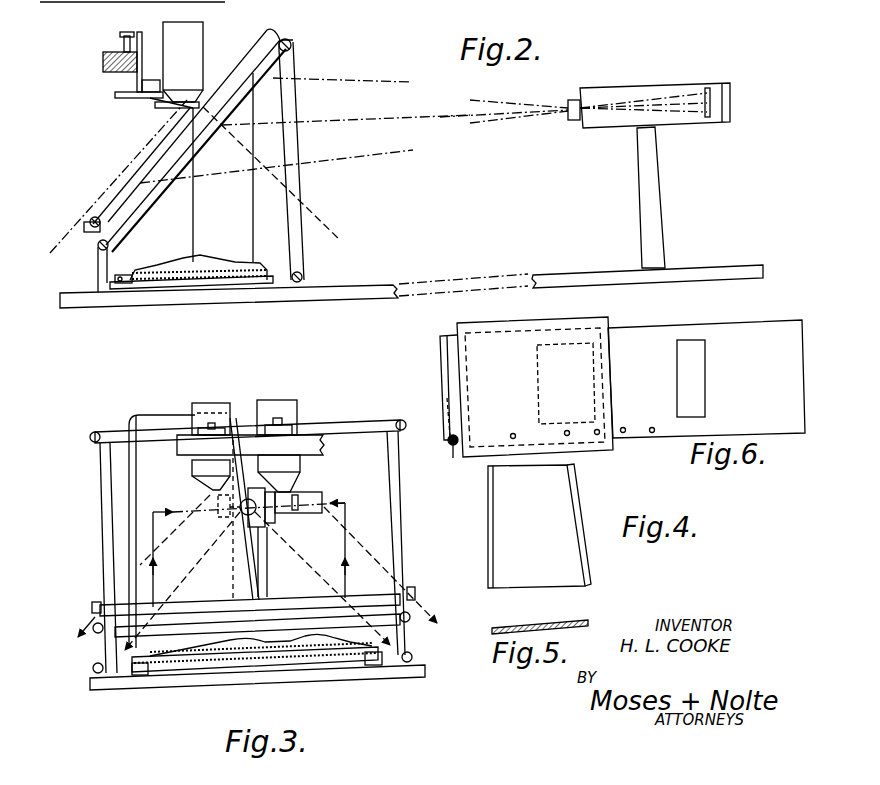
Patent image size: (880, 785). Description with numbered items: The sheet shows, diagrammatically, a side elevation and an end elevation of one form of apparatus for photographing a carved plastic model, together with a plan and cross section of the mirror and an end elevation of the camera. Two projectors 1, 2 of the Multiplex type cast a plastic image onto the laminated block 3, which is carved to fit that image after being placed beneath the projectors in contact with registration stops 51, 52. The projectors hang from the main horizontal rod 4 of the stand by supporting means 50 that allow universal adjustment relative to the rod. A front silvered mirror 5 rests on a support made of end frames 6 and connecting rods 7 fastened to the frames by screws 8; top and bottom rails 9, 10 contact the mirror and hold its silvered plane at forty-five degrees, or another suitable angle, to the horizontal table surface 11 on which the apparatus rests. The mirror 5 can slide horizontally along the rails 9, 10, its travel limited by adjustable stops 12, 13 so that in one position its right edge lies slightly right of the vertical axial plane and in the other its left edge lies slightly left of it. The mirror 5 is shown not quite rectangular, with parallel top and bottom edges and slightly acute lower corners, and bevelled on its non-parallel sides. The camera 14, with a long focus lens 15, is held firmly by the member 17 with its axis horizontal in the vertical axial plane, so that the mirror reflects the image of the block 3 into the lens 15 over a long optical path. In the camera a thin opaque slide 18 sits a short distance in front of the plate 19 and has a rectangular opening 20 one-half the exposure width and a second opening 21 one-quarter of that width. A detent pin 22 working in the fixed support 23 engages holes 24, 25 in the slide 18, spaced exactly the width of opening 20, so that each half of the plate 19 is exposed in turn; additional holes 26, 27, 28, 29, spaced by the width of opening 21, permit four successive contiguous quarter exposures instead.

In FIG. 3, the projector 1 is at (202, 410).
In FIG. 2, the projector 2 is at (197, 33).
In FIG. 3, the projector 2 is at (270, 407).
In FIG. 2, the laminated block 3 is at (187, 270).
In FIG. 3, the laminated block 3 is at (272, 658).
In FIG. 2, the main horizontal rod 4 is at (103, 63).
In FIG. 3, the main horizontal rod 4 is at (307, 440).
In FIG. 2, the front silvered mirror 5 is at (273, 30).
In FIG. 3, the front silvered mirror 5 is at (156, 422).
In FIG. 4, the front silvered mirror 5 is at (563, 475).
In FIG. 2, the end frames 6 is at (183, 158).
In FIG. 3, the end frames 6 is at (100, 516).
In FIG. 3, the connecting rods 7 is at (320, 620).
In FIG. 2, the screws 8 is at (293, 46).
In FIG. 3, the screws 8 is at (90, 440).
In FIG. 2, the top rail 9 is at (293, 42).
In FIG. 3, the top rail 9 is at (343, 422).
In FIG. 2, the bottom rail 10 is at (88, 233).
In FIG. 3, the bottom rail 10 is at (213, 604).
In FIG. 2, the horizontal table surface 11 is at (360, 292).
In FIG. 3, the horizontal table surface 11 is at (193, 683).
In FIG. 3, the adjustable stop 12 is at (92, 608).
In FIG. 2, the adjustable stop 13 is at (88, 220).
In FIG. 3, the adjustable stop 13 is at (416, 594).
In FIG. 2, the camera 14 is at (663, 84).
In FIG. 3, the camera 14 is at (270, 527).
In FIG. 6, the camera 14 is at (492, 325).
In FIG. 2, the lens 15 is at (575, 122).
In FIG. 3, the lens 15 is at (240, 520).
In FIG. 2, the supporting member 17 is at (655, 183).
In FIG. 3, the supporting member 17 is at (262, 577).
In FIG. 2, the opaque slide 18 is at (711, 98).
In FIG. 3, the opaque slide 18 is at (320, 493).
In FIG. 6, the opaque slide 18 is at (758, 328).
In FIG. 2, the plate 19 is at (724, 83).
In FIG. 6, the rectangular opening 20 is at (537, 370).
In FIG. 3, the second opening 21 is at (296, 497).
In FIG. 6, the second opening 21 is at (702, 382).
In FIG. 6, the detent pin 22 is at (453, 450).
In FIG. 3, the fixed support 23 is at (218, 521).
In FIG. 6, the fixed support 23 is at (448, 442).
In FIG. 6, the hole 24 is at (447, 410).
In FIG. 6, the hole 25 is at (512, 432).
In FIG. 6, the hole 26 is at (568, 430).
In FIG. 6, the hole 27 is at (600, 428).
In FIG. 6, the hole 28 is at (624, 427).
In FIG. 6, the hole 29 is at (652, 427).
In FIG. 2, the supporting means 50 is at (157, 100).
In FIG. 2, the registration stop 51 is at (128, 284).
In FIG. 3, the registration stop 51 is at (378, 665).
In FIG. 3, the registration stop 52 is at (137, 676).